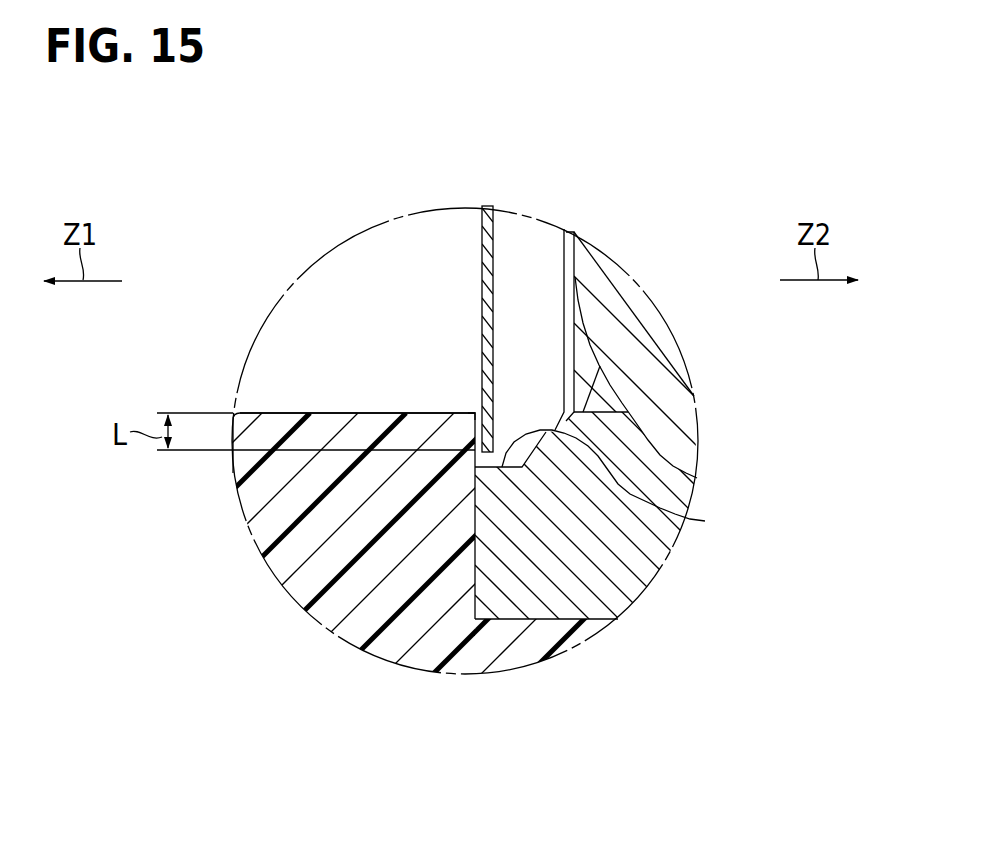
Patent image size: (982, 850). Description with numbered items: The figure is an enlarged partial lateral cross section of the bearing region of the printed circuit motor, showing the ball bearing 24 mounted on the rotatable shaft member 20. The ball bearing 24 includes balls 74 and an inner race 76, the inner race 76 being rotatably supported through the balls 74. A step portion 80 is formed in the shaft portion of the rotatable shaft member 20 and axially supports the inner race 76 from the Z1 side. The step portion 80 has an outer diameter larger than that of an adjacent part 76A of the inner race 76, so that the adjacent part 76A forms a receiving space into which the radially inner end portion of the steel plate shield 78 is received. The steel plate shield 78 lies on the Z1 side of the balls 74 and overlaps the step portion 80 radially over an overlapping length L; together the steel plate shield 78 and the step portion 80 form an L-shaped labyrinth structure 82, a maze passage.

The rotatable shaft member 20 is at (326, 609).
The ball bearing 24 is at (549, 623).
The balls 74 is at (670, 360).
The inner race 76 is at (647, 540).
The adjacent part of the inner race 76A is at (705, 521).
The steel plate shield 78 is at (480, 318).
The step portion 80 is at (408, 412).
The labyrinth structure 82 is at (474, 408).